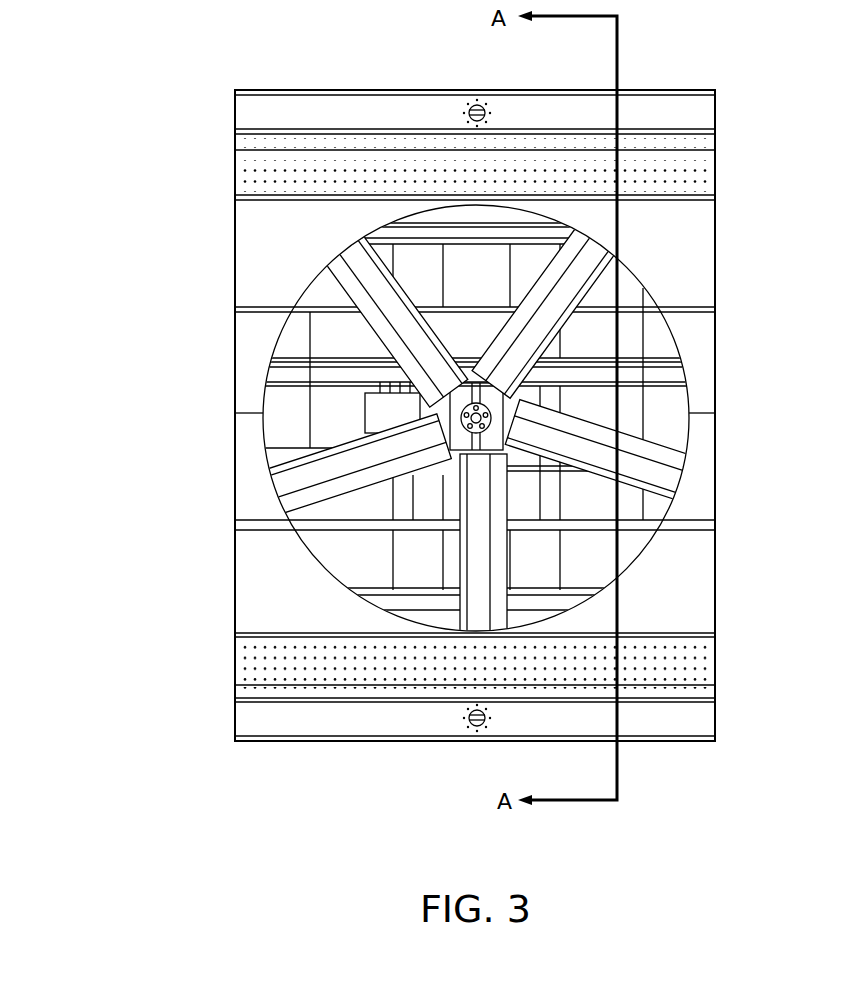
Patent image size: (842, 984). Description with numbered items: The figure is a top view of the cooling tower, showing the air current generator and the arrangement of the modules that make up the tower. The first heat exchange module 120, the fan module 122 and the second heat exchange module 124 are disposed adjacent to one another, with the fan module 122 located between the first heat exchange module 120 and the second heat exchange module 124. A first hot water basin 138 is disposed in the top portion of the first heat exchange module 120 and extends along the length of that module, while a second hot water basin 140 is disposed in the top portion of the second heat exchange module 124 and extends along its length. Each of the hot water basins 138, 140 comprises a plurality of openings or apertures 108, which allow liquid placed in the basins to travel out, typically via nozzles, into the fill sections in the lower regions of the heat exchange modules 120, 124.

The openings or apertures 108 is at (702, 144).
The first heat exchange module 120 is at (235, 596).
The fan module 122 is at (235, 472).
The second heat exchange module 124 is at (235, 265).
The first hot water basin 138 is at (235, 667).
The second hot water basin 140 is at (235, 164).